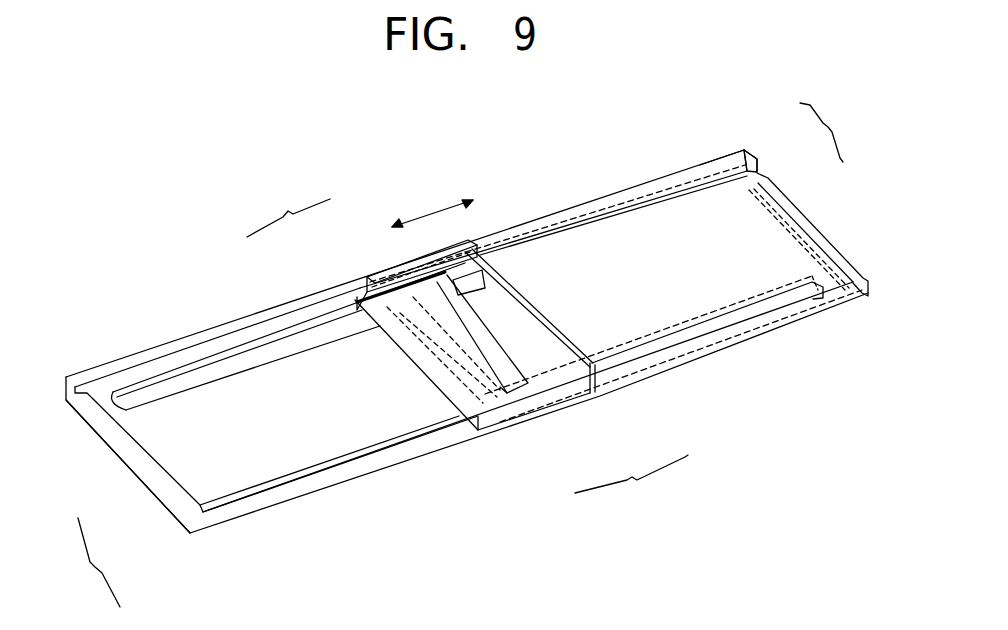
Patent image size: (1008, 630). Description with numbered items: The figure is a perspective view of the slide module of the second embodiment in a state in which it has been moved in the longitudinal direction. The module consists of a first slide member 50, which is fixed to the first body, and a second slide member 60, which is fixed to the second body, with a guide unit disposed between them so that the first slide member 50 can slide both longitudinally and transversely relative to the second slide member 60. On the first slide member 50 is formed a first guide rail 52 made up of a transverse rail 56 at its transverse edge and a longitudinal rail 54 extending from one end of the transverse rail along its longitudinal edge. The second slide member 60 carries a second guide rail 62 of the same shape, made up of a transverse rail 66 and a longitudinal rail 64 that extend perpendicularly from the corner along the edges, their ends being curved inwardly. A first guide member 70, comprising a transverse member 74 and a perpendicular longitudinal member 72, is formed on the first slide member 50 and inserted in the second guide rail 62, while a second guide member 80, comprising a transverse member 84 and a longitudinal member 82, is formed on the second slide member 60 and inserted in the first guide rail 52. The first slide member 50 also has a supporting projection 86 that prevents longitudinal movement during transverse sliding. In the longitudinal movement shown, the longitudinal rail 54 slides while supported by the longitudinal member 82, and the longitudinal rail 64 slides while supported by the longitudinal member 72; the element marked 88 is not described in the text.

The first slide member 50 is at (197, 327).
The first guide rail 52 is at (90, 562).
The longitudinal rail 54 is at (274, 500).
The transverse rail 56 is at (158, 493).
The second slide member 60 is at (573, 198).
The second guide rail 62 is at (826, 132).
The longitudinal rail 64 is at (747, 152).
The transverse rail 66 is at (775, 190).
The first guide member 70 is at (288, 211).
The longitudinal member 72 is at (325, 337).
The transverse member 74 is at (384, 267).
The second guide member 80 is at (631, 481).
The longitudinal member 82 is at (612, 352).
The transverse member 84 is at (505, 382).
The supporting projection 86 is at (488, 272).
The end protrusion 88 is at (747, 188).